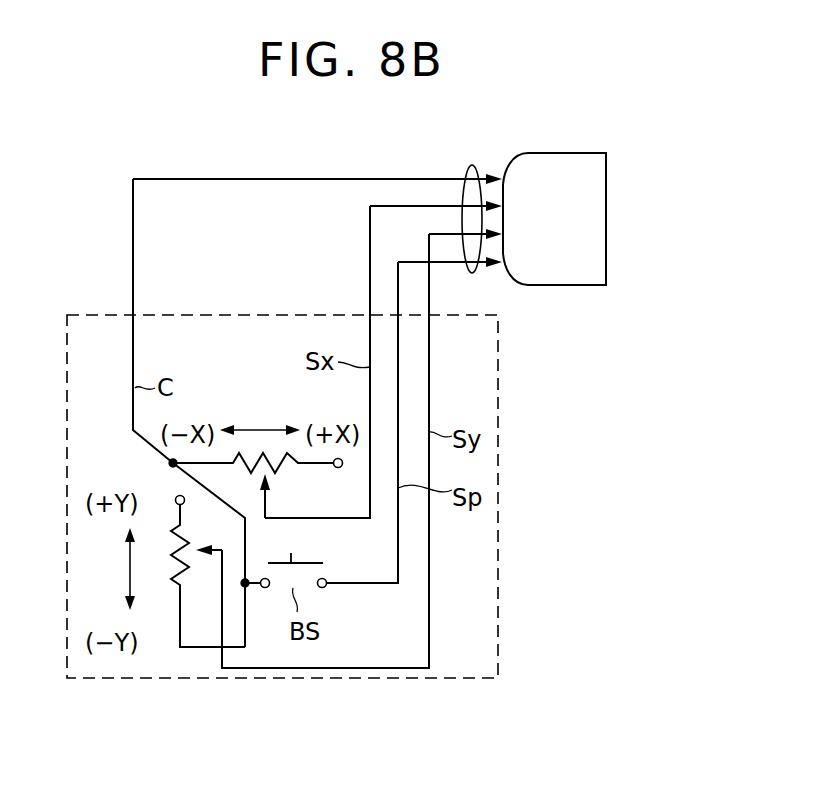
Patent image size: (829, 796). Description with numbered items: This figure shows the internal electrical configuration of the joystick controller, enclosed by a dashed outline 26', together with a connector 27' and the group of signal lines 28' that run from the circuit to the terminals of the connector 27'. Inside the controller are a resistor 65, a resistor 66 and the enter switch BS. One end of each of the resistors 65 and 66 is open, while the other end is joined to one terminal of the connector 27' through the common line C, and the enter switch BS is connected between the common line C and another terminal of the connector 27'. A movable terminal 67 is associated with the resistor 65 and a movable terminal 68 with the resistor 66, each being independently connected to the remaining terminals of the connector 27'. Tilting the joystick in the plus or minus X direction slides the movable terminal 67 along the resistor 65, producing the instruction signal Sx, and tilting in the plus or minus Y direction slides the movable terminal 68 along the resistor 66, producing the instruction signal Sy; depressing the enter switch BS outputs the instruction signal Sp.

The coordinate input unit 26' is at (321, 496).
The connector 27' is at (554, 257).
The signal lines 28' is at (317, 190).
The resistor 65 is at (296, 482).
The resistor 66 is at (186, 528).
The movable terminal 67 is at (265, 512).
The movable terminal 68 is at (208, 554).